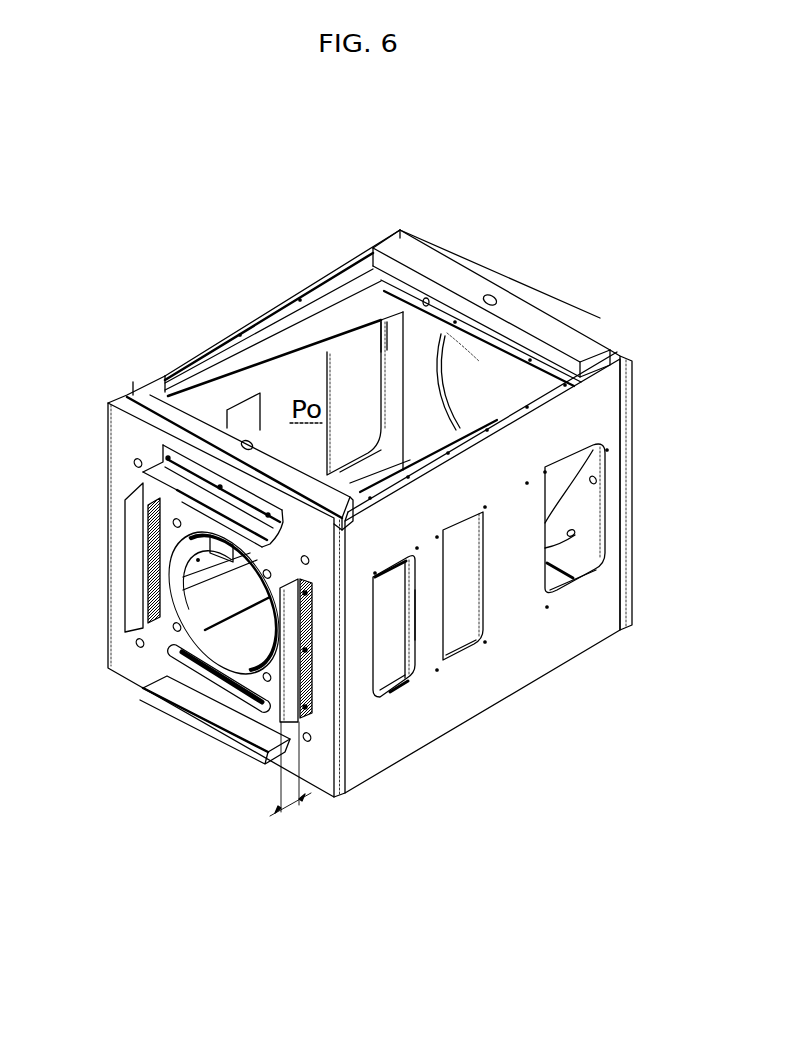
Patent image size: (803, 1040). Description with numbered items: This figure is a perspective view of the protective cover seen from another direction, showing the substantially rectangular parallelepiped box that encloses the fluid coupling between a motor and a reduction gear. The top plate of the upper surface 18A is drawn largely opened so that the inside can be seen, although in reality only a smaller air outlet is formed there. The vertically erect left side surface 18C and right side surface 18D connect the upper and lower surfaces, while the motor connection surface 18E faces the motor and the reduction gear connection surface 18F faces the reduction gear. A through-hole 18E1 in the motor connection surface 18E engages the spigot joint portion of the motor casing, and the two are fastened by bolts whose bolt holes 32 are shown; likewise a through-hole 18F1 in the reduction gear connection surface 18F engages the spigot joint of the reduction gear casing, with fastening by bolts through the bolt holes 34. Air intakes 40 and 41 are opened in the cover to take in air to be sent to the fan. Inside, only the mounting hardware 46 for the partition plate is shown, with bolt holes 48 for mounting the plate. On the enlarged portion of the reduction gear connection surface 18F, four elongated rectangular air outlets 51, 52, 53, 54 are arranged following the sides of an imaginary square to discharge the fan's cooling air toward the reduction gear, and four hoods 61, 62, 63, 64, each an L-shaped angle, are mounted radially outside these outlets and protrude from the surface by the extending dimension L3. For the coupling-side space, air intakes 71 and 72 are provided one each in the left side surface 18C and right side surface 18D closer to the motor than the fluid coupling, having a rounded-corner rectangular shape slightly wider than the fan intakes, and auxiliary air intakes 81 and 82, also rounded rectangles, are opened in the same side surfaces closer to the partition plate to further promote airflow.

The upper surface 18A is at (417, 268).
The left side surface 18C is at (528, 663).
The right side surface 18D is at (261, 311).
The motor connection surface 18E is at (628, 384).
The through-hole 18E1 is at (440, 350).
The reduction gear connection surface 18F is at (127, 650).
The through-hole 18F1 is at (170, 622).
The bolt holes 32 is at (575, 533).
The bolt holes 34 is at (304, 554).
The air intake 40 is at (408, 612).
The air intake 41 is at (192, 558).
The mounting hardware 46 is at (408, 630).
The bolt holes 48 is at (418, 590).
The air outlet 51 is at (143, 473).
The air outlet 52 is at (150, 612).
The air outlet 53 is at (222, 683).
The air outlet 54 is at (310, 578).
The hood 61 is at (160, 464).
The hood 62 is at (130, 555).
The hood 63 is at (224, 722).
The hood 64 is at (297, 690).
The air intake 71 is at (569, 590).
The air intake 72 is at (379, 350).
The auxiliary air intake 81 is at (470, 648).
The auxiliary air intake 82 is at (245, 402).
The extending dimension L3 is at (291, 806).